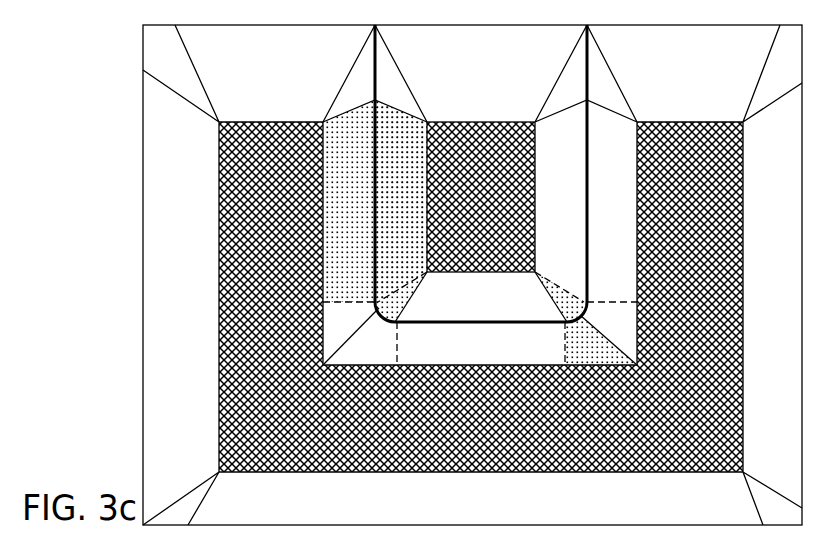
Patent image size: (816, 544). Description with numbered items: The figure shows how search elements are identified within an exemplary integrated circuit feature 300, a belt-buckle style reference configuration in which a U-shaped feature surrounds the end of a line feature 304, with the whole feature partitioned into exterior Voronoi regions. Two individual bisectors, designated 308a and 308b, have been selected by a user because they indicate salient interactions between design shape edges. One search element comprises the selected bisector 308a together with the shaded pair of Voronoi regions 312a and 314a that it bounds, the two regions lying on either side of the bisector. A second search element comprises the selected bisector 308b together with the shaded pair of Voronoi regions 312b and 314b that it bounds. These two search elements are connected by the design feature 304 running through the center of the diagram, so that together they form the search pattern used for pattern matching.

The integrated circuit feature 300 is at (116, 97).
The line feature 304 is at (485, 128).
The bisector 308a is at (378, 125).
The bisector 308b is at (556, 310).
The Voronoi region 312a is at (370, 211).
The Voronoi region 312b is at (605, 359).
The Voronoi region 314a is at (420, 190).
The Voronoi region 314b is at (553, 294).